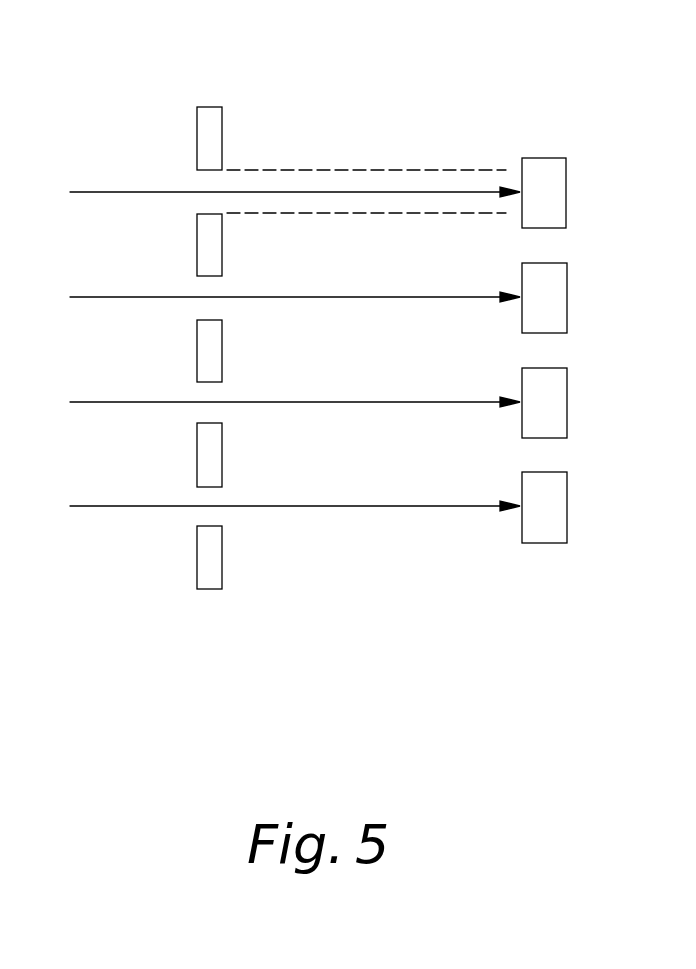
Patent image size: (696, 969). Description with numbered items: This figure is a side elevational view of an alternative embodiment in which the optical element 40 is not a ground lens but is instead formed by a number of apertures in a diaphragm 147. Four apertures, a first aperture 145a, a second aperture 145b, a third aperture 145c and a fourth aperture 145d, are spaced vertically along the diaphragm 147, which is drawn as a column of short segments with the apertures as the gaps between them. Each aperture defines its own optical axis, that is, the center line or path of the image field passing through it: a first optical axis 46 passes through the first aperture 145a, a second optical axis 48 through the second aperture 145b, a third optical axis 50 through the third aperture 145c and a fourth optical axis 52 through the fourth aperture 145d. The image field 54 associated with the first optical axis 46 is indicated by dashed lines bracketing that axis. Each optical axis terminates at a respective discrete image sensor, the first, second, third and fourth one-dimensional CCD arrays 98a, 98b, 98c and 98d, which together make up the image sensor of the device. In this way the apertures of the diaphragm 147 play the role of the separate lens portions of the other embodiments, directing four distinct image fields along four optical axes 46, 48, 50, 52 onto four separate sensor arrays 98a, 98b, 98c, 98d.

The optical element 40 is at (219, 86).
The first aperture 145a is at (222, 181).
The second aperture 145b is at (222, 290).
The third aperture 145c is at (222, 395).
The fourth aperture 145d is at (222, 500).
The diaphragm 147 is at (208, 590).
The image field 54 is at (257, 170).
The first optical axis 46 is at (407, 192).
The second optical axis 48 is at (363, 297).
The third optical axis 50 is at (394, 402).
The fourth optical axis 52 is at (367, 506).
The first one-dimensional CCD array 98a is at (566, 193).
The second one-dimensional CCD array 98b is at (567, 302).
The third one-dimensional CCD array 98c is at (567, 404).
The fourth one-dimensional CCD array 98d is at (567, 508).